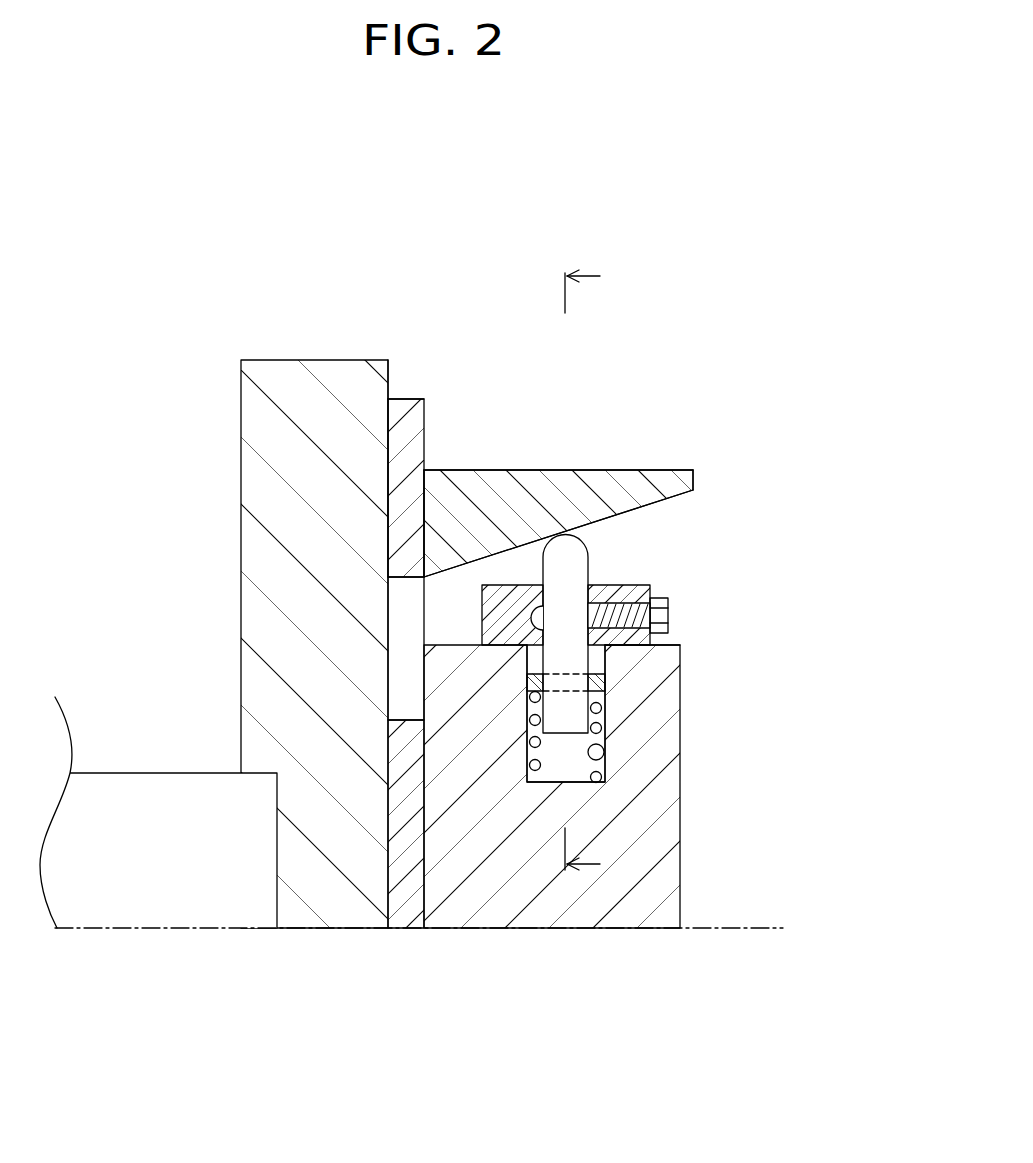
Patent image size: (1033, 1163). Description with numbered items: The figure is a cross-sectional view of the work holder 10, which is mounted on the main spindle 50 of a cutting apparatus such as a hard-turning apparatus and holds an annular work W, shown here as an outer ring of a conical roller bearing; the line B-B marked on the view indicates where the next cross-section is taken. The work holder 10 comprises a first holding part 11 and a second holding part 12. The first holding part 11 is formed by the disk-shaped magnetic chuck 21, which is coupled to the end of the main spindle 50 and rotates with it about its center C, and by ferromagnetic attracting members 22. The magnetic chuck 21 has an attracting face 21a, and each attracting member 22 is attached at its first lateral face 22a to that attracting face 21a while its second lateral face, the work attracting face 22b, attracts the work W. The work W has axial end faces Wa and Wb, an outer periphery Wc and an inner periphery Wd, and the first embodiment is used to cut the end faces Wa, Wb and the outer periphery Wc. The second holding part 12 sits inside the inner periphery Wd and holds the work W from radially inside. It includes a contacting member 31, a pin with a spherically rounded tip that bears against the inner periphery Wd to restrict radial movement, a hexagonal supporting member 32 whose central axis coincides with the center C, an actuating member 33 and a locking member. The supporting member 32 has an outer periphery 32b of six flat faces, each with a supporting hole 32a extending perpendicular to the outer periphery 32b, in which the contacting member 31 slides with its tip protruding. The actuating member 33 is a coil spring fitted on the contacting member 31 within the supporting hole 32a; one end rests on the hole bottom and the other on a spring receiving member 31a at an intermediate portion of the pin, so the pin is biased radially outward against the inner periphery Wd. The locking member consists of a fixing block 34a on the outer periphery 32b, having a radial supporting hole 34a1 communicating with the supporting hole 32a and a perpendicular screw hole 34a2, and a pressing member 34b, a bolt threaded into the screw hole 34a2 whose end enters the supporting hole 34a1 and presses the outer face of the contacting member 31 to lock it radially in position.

The work holder 10 is at (478, 248).
The first holding part 11 is at (336, 322).
The second holding part 12 is at (697, 752).
The magnetic chuck 21 is at (264, 360).
The attracting face 21a is at (393, 372).
The attracting member 22 is at (405, 430).
The first lateral face 22a is at (388, 465).
The work attracting face 22b is at (426, 402).
The contacting member 31 is at (568, 548).
The spring receiving member 31a is at (605, 682).
The supporting member 32 is at (680, 720).
The supporting hole 32a is at (605, 765).
The outer periphery 32b is at (672, 645).
The actuating member 33 is at (530, 738).
The fixing block 34a is at (513, 585).
The supporting hole 34a1 is at (545, 628).
The screw hole 34a2 is at (637, 603).
The pressing member 34b is at (668, 615).
The main spindle 50 is at (115, 773).
The work W is at (675, 437).
The axial end face Wa is at (424, 490).
The axial end face Wb is at (693, 477).
The outer periphery Wc is at (623, 470).
The inner periphery Wd is at (660, 502).
The line B- B is at (590, 560).
The center C is at (733, 928).